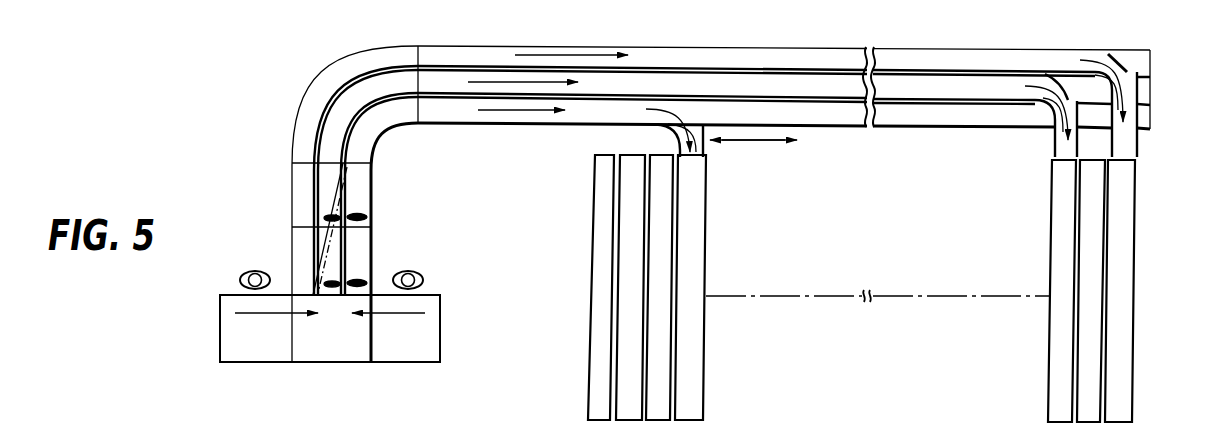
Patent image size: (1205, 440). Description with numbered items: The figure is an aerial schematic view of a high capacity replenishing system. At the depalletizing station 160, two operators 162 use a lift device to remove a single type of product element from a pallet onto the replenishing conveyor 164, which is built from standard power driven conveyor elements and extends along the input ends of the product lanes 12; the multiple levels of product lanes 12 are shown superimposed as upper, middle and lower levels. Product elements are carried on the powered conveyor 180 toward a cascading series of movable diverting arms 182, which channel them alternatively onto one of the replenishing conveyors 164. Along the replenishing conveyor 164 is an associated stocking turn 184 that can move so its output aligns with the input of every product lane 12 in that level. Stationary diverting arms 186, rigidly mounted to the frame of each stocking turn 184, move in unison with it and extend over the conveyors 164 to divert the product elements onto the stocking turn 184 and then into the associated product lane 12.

The product lanes 12 is at (697, 224).
The depalletizing station 160 is at (272, 364).
The operators 162 is at (262, 272).
The replenishing conveyor 164 is at (468, 108).
The powered conveyor 180 is at (360, 268).
The diverting arms 182 is at (313, 181).
The stocking turn 184 is at (702, 150).
The stationary diverting arms 186 is at (1045, 78).